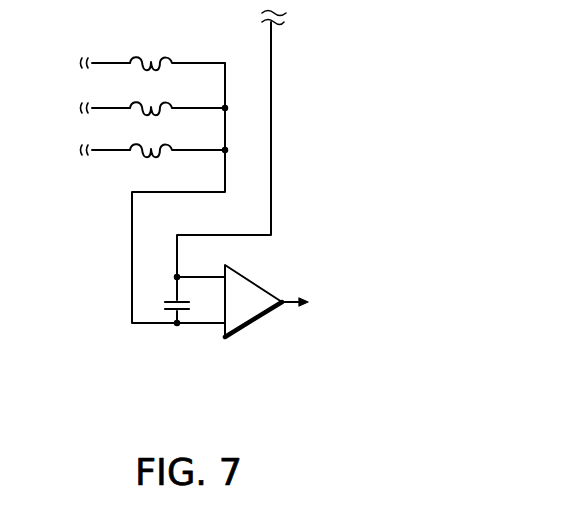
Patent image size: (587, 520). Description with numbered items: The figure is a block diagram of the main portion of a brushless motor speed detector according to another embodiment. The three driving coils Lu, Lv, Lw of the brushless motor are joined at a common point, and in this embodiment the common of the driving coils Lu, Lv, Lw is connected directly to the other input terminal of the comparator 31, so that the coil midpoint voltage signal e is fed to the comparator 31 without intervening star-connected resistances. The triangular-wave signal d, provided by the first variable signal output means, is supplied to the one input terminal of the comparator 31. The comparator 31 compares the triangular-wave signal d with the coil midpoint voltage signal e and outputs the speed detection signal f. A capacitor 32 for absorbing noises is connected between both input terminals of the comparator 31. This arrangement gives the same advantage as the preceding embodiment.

The driving coil Lu is at (153, 56).
The driving coil Lv is at (167, 84).
The driving coil Lw is at (167, 126).
The triangular-wave signal d is at (282, 41).
The coil midpoint voltage signal e is at (132, 277).
The capacitor 32 is at (164, 302).
The comparator 31 is at (253, 322).
The speed detection signal f is at (373, 308).